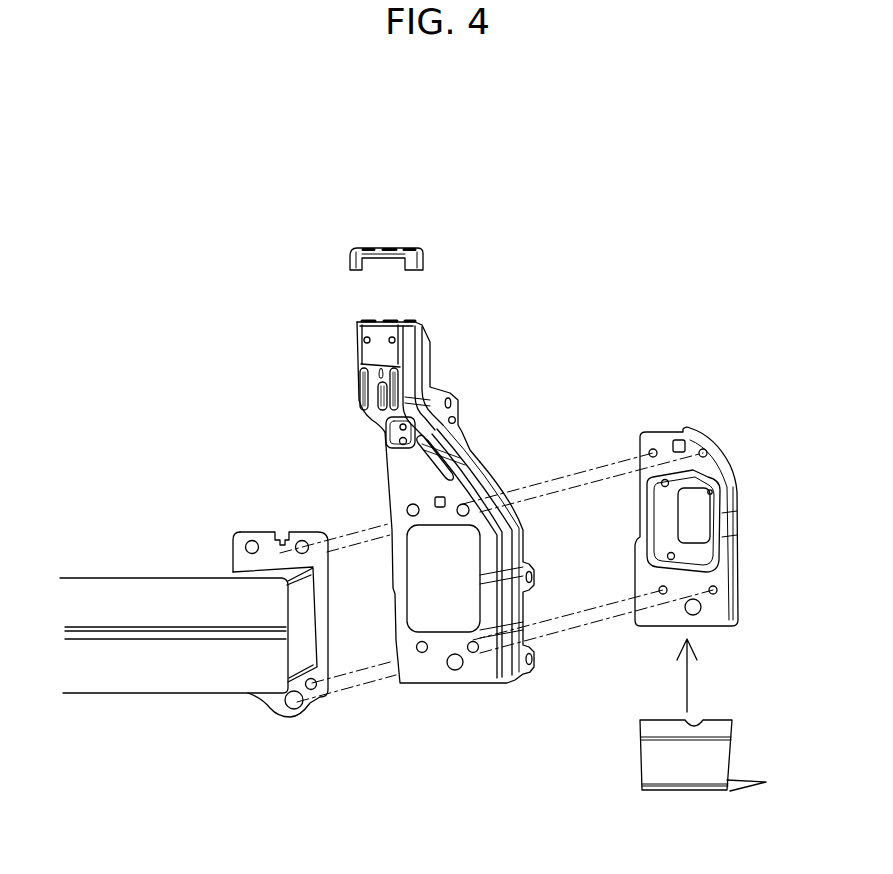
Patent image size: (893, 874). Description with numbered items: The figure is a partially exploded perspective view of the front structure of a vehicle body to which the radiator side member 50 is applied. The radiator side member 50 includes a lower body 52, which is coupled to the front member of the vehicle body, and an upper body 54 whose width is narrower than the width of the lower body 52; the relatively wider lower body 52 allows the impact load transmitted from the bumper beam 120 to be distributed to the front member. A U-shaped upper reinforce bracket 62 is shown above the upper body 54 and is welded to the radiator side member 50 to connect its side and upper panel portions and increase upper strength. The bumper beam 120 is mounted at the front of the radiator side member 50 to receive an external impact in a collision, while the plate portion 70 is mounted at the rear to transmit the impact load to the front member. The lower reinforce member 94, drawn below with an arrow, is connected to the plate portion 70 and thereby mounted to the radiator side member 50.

The radiator side member 50 is at (478, 502).
The lower body 52 is at (528, 617).
The upper body 54 is at (438, 359).
The upper reinforce bracket 62 is at (425, 257).
The plate portion 70 is at (735, 591).
The lower reinforce member 94 is at (683, 772).
The bumper beam 120 is at (197, 675).